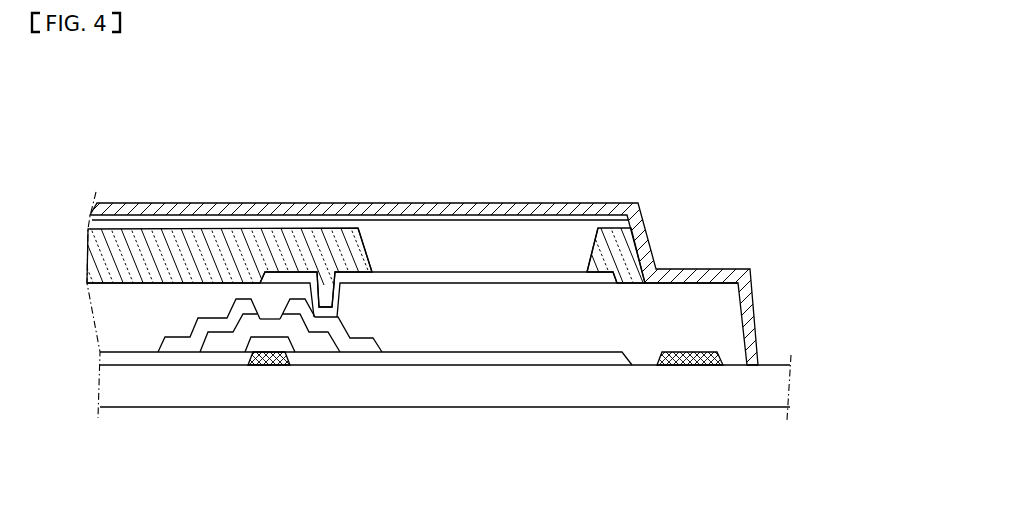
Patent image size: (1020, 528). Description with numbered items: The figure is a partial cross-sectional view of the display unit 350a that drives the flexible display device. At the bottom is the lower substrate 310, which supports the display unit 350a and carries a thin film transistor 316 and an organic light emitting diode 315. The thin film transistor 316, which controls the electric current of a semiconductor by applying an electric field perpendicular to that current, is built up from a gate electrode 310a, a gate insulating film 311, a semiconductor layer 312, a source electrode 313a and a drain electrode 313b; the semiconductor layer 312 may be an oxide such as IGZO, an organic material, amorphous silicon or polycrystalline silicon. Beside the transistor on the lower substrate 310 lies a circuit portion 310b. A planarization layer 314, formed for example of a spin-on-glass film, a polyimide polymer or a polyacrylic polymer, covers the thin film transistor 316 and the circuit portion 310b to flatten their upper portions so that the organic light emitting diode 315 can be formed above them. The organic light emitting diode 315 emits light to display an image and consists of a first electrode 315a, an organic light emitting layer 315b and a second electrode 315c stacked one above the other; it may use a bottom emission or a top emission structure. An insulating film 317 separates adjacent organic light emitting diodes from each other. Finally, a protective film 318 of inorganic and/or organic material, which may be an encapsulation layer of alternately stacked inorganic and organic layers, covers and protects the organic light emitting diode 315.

The display unit 350a is at (684, 152).
The protective film 318 is at (93, 210).
The insulating film 317 is at (93, 250).
The thin film transistor 316 is at (410, 473).
The organic light emitting diode 315 is at (405, 119).
The first electrode 315a is at (408, 277).
The organic light emitting layer 315b is at (475, 253).
The second electrode 315c is at (562, 223).
The planarization layer 314 is at (108, 313).
The source electrode 313a is at (173, 347).
The drain electrode 313b is at (358, 345).
The semiconductor layer 312 is at (322, 342).
The gate insulating film 311 is at (527, 358).
The lower substrate 310 is at (775, 386).
The gate electrode 310a is at (268, 367).
The circuit portion 310b is at (687, 363).